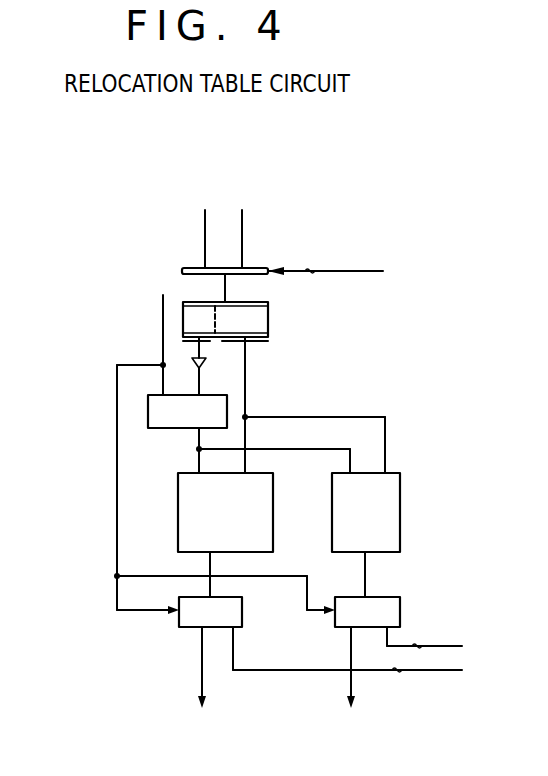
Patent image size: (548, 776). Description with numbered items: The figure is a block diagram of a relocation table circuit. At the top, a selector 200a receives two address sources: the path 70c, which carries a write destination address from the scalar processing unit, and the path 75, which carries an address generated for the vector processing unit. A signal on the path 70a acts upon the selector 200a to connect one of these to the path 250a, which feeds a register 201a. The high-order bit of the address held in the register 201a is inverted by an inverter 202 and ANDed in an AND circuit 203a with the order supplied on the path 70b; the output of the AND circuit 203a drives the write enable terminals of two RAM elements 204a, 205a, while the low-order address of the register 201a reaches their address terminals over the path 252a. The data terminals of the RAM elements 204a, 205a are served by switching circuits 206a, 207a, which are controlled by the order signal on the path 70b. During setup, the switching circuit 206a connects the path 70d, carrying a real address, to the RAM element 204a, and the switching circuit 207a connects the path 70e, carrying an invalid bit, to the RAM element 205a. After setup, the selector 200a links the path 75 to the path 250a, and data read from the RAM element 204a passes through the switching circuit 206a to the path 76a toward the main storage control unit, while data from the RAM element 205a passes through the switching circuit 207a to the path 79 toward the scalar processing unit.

The path 70a is at (310, 269).
The path 70b is at (163, 320).
The path 70c is at (205, 243).
The path 70d is at (397, 670).
The path 70e is at (422, 648).
The path 75 is at (242, 238).
The path 76a is at (203, 685).
The path 79 is at (351, 688).
The selector 200a is at (182, 268).
The register 201a is at (268, 320).
The inverter 202 is at (206, 362).
The AND circuit 203a is at (148, 420).
The RAM element 204a is at (178, 510).
The RAM element 205a is at (400, 515).
The switching circuit 206a is at (242, 616).
The switching circuit 207a is at (400, 597).
The path 250a is at (225, 285).
The path 252a is at (251, 393).